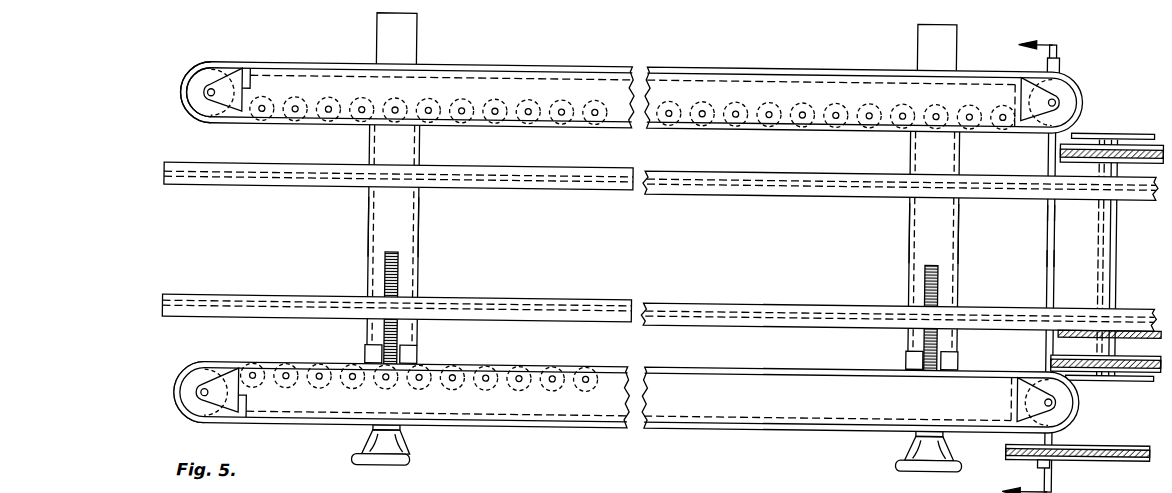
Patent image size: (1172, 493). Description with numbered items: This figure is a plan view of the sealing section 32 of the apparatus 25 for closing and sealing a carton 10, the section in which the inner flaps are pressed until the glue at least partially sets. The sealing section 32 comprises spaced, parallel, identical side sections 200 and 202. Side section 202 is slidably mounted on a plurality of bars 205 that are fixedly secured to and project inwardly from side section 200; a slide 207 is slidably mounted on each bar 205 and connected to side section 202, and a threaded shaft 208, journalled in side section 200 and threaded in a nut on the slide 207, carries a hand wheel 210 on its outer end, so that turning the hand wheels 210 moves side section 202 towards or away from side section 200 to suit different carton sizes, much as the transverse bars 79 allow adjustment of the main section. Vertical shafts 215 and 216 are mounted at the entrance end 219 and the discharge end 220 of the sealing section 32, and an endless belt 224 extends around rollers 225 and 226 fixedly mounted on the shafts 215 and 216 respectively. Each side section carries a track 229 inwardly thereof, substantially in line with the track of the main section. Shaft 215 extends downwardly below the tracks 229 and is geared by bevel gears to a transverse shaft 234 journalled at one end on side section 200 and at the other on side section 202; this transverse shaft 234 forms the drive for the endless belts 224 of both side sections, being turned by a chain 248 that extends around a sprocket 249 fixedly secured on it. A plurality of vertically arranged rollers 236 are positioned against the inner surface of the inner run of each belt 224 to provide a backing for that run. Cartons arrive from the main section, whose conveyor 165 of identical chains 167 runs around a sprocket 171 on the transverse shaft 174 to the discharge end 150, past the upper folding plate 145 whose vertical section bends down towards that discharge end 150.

The carton 10 is at (1031, 256).
The apparatus 25 is at (882, 228).
The sealing section 32 is at (404, 226).
The transverse bars 79 is at (376, 28).
The upper folding plate 145 is at (1095, 129).
The discharge end 150 is at (1110, 256).
The conveyor 165 is at (1061, 149).
The chains 167 is at (1124, 315).
The sprocket 171 is at (1057, 365).
The transverse shaft 174 is at (1103, 278).
The side section 200 is at (745, 434).
The side section 202 is at (882, 234).
The bars 205 is at (403, 363).
The slide 207 is at (418, 238).
The threaded shaft 208 is at (941, 278).
The hand wheel 210 is at (414, 464).
The vertical shaft 215 is at (1058, 94).
The vertical shaft 216 is at (203, 393).
The entrance end 219 is at (1040, 208).
The discharge end 220 is at (196, 226).
The endless belt 224 is at (381, 380).
The roller 225 is at (1038, 70).
The roller 226 is at (210, 115).
The track 229 is at (727, 303).
The transverse shaft 234 is at (1048, 252).
The rollers 236 is at (796, 125).
The chain 248 is at (1146, 456).
The sprocket 249 is at (1056, 462).